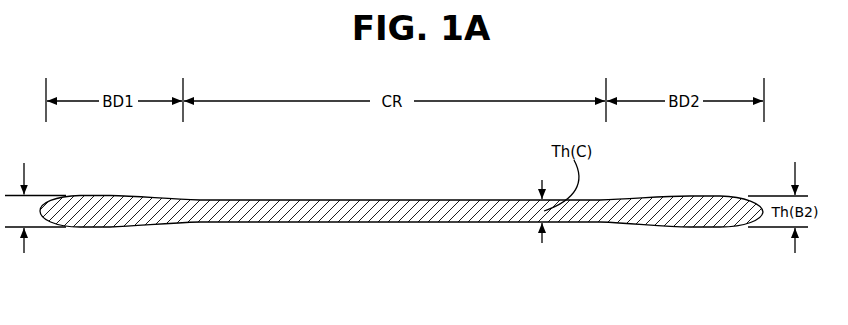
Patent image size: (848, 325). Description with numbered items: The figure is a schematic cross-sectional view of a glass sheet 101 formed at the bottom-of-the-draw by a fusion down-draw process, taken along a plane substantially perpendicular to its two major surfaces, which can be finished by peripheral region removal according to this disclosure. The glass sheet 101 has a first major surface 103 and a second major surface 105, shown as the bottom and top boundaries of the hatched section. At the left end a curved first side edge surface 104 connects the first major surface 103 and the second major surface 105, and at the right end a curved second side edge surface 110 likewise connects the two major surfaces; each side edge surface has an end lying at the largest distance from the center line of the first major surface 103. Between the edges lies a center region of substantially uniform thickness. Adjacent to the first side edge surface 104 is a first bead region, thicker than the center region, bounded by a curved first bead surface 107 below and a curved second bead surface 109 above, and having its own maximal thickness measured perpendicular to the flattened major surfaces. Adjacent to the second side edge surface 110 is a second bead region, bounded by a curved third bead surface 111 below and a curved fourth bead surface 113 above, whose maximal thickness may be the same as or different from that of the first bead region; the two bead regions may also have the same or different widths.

The glass sheet 101 is at (268, 128).
The first major surface 103 is at (376, 223).
The first side edge surface 104 is at (43, 205).
The second major surface 105 is at (330, 199).
The first bead surface 107 is at (100, 228).
The second bead surface 109 is at (100, 195).
The second side edge surface 110 is at (757, 223).
The third bead surface 111 is at (697, 227).
The fourth bead surface 113 is at (705, 196).